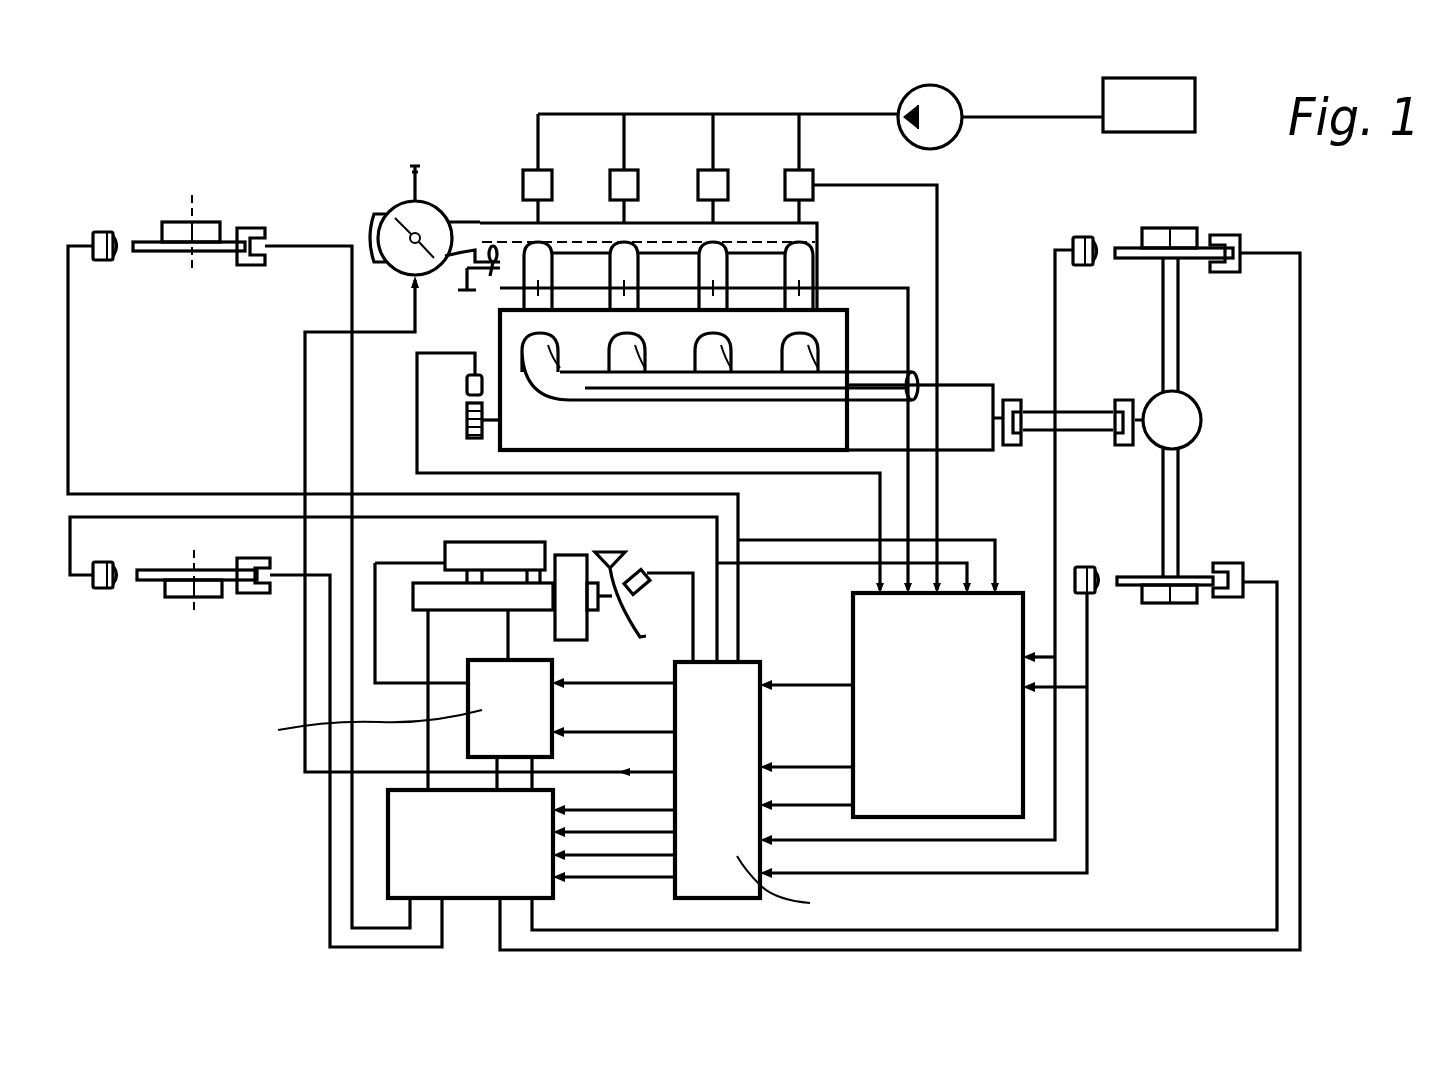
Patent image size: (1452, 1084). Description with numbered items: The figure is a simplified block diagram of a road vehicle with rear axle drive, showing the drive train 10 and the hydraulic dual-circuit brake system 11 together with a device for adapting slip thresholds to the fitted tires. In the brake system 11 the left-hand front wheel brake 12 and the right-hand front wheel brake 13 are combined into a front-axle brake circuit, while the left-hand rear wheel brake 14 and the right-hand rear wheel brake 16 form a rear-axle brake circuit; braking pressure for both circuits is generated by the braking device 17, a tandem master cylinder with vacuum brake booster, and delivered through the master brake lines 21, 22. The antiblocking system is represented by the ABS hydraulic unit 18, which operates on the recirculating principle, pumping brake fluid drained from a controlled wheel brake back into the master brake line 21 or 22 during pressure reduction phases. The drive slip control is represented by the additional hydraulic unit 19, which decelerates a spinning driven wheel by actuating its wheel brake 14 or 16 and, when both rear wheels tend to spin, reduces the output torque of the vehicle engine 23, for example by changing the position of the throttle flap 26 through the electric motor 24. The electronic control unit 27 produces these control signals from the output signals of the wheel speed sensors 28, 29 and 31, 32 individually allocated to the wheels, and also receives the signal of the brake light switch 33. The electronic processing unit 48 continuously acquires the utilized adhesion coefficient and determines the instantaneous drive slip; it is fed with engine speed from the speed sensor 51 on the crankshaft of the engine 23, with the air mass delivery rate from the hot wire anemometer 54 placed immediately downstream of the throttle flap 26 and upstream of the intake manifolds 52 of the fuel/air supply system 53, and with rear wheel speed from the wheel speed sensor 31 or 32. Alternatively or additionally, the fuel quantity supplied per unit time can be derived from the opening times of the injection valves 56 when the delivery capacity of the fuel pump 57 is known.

The drive train 10 is at (996, 272).
The hydraulic dual-circuit brake system 11 is at (1187, 612).
The left-hand front wheel brake 12 is at (155, 580).
The right-hand front wheel brake 13 is at (146, 242).
The left-hand rear wheel brake 14 is at (1135, 586).
The right-hand rear wheel brake 16 is at (1130, 248).
The braking device 17 is at (468, 620).
The ABS hydraulic unit 18 is at (538, 813).
The ASR hydraulic unit 19 is at (552, 710).
The master brake line 21 is at (513, 633).
The master brake line 22 is at (428, 627).
The vehicle engine 23 is at (833, 345).
The electric motor 24 is at (432, 212).
The throttle flap 26 is at (380, 215).
The electronic control unit 27 is at (738, 738).
The wheel speed sensor 28 is at (100, 588).
The wheel speed sensor 29 is at (100, 232).
The wheel speed sensor 31 is at (1092, 594).
The wheel speed sensor 32 is at (1085, 237).
The brake light switch 33 is at (645, 588).
The electronic processing unit 48 is at (1000, 615).
The speed sensor 51 is at (467, 385).
The intake manifolds 52 is at (708, 268).
The fuel/air supply system 53 is at (828, 262).
The hot wire anemometer 54 is at (489, 272).
The injection valves 56 is at (612, 186).
The fuel pump 57 is at (945, 103).